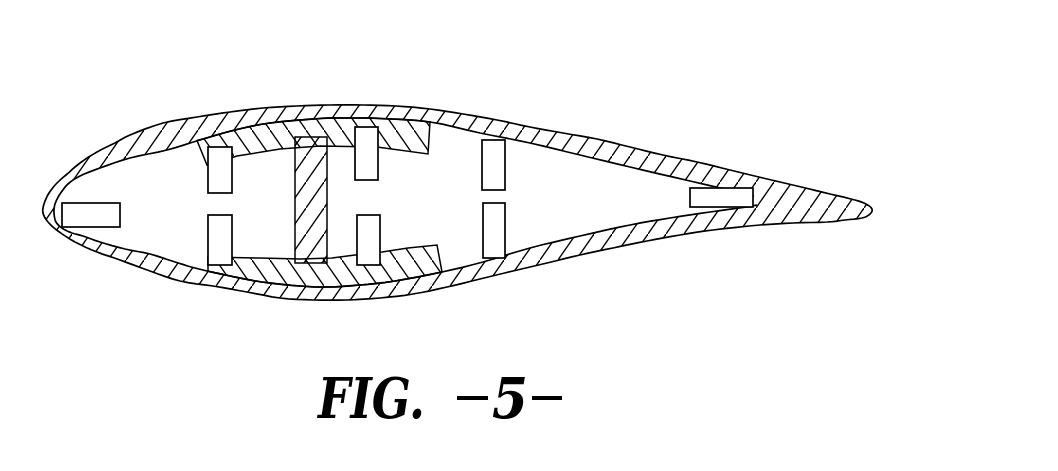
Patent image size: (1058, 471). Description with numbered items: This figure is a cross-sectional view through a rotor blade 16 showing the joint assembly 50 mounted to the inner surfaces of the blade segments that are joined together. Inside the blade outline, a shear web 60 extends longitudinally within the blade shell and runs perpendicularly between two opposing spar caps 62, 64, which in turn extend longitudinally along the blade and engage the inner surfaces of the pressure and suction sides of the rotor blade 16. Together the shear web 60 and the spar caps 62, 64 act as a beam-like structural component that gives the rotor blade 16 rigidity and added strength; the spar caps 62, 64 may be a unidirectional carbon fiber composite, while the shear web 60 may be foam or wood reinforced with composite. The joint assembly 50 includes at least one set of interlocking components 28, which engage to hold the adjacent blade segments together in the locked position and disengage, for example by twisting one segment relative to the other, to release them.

The rotor blade 16 is at (647, 81).
The interlocking components 28 is at (200, 190).
The joint assembly 50 is at (539, 206).
The shear web 60 is at (307, 190).
The spar cap 62 is at (403, 134).
The spar cap 64 is at (345, 277).